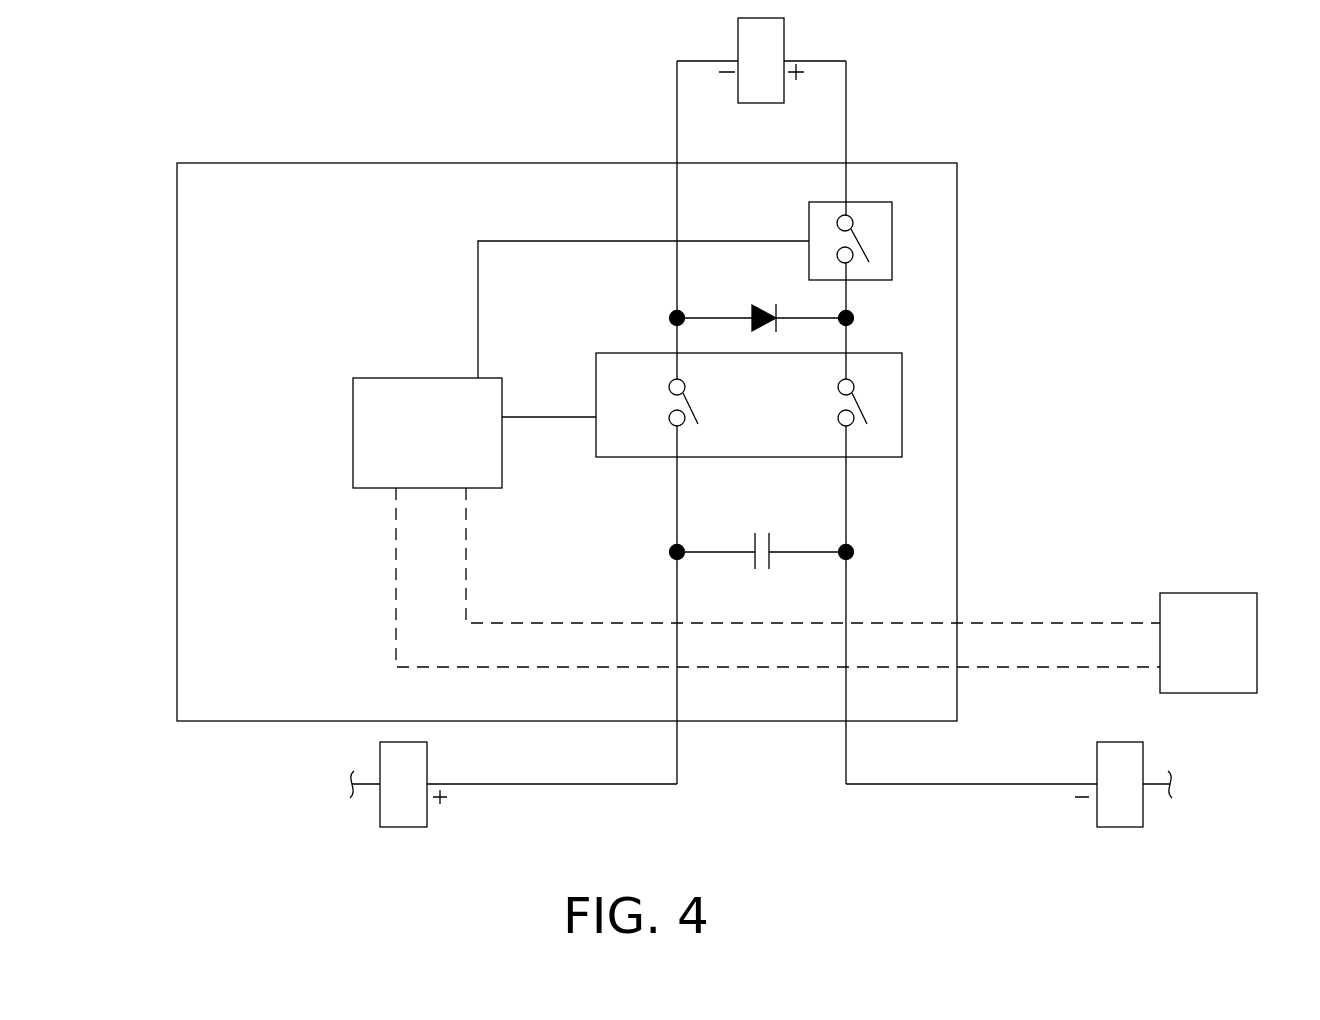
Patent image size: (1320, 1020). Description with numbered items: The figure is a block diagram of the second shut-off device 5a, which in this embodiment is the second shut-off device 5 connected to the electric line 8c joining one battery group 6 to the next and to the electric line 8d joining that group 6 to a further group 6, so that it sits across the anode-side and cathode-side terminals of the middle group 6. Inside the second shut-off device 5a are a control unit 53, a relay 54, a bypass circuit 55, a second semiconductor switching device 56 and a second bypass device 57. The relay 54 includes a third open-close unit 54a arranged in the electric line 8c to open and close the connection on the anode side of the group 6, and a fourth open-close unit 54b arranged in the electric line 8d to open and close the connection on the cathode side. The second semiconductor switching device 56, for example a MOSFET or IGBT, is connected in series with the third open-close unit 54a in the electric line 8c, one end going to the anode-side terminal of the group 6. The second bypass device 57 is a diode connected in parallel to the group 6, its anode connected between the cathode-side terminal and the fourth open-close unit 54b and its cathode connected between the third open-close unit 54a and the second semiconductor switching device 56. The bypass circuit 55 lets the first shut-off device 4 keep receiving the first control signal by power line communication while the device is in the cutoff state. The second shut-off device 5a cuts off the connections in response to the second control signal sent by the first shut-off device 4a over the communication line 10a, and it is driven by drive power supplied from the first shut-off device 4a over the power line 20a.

The first shut-off device 4 is at (1231, 591).
The first shut-off device 4a is at (1214, 587).
The second shut-off device 5 is at (612, 389).
The second shut-off device 5a is at (935, 157).
The group 6 is at (738, 33).
The electric line 8c is at (975, 784).
The electric line 8d is at (533, 784).
The communication line 10a is at (1111, 623).
The power line 20a is at (1022, 667).
The control unit 53 is at (353, 435).
The relay 54 is at (800, 396).
The third open-close unit 54a is at (862, 404).
The fourth open-close unit 54b is at (695, 404).
The bypass circuit 55 is at (808, 552).
The second semiconductor switching device 56 is at (892, 240).
The second bypass device 57 is at (758, 306).